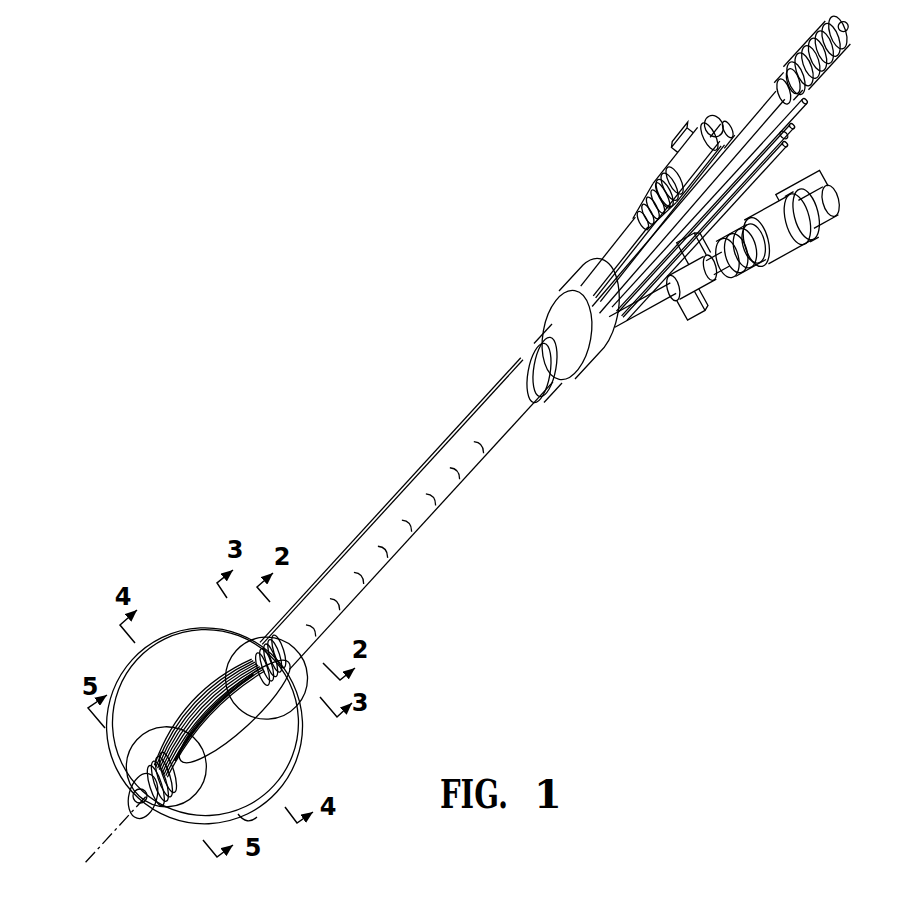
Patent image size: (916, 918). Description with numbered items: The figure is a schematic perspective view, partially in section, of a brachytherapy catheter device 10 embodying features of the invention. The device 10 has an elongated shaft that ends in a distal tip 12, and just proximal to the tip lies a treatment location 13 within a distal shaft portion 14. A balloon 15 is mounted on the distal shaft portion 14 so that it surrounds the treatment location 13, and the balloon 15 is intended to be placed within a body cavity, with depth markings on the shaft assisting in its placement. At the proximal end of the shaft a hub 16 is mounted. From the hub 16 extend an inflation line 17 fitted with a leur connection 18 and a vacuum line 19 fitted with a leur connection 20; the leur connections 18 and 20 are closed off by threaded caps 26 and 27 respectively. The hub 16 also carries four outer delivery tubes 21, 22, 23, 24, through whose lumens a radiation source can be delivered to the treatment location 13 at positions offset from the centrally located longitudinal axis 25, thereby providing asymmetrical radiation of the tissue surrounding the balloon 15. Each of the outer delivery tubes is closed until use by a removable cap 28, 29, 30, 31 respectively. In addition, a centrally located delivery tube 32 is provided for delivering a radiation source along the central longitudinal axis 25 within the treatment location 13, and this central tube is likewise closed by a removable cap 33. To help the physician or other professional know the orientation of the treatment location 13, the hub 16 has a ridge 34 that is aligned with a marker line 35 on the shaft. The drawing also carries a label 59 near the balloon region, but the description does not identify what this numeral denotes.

The brachytherapy catheter device 10 is at (385, 465).
The distal tip 12 is at (123, 783).
The treatment location 13 is at (240, 753).
The distal shaft portion 14 is at (210, 687).
The balloon 15 is at (137, 657).
The hub 16 is at (568, 310).
The inflation line 17 is at (646, 303).
The leur connection 18 is at (790, 252).
The vacuum line 19 is at (592, 270).
The leur connection 20 is at (672, 163).
The outer delivery tube 21 is at (640, 250).
The outer delivery tube 22 is at (657, 210).
The outer delivery tube 23 is at (750, 178).
The outer delivery tube 24 is at (800, 133).
The central longitudinal axis 25 is at (103, 833).
The threaded cap 26 is at (832, 200).
The threaded cap 27 is at (693, 146).
The removable cap 28 is at (717, 136).
The removable cap 29 is at (728, 138).
The removable cap 30 is at (782, 150).
The removable cap 31 is at (830, 100).
The centrally located delivery tube 32 is at (778, 105).
The removable cap 33 is at (843, 70).
The ridge 34 is at (548, 342).
The marker line 35 is at (492, 392).
The electrode 59 is at (248, 821).